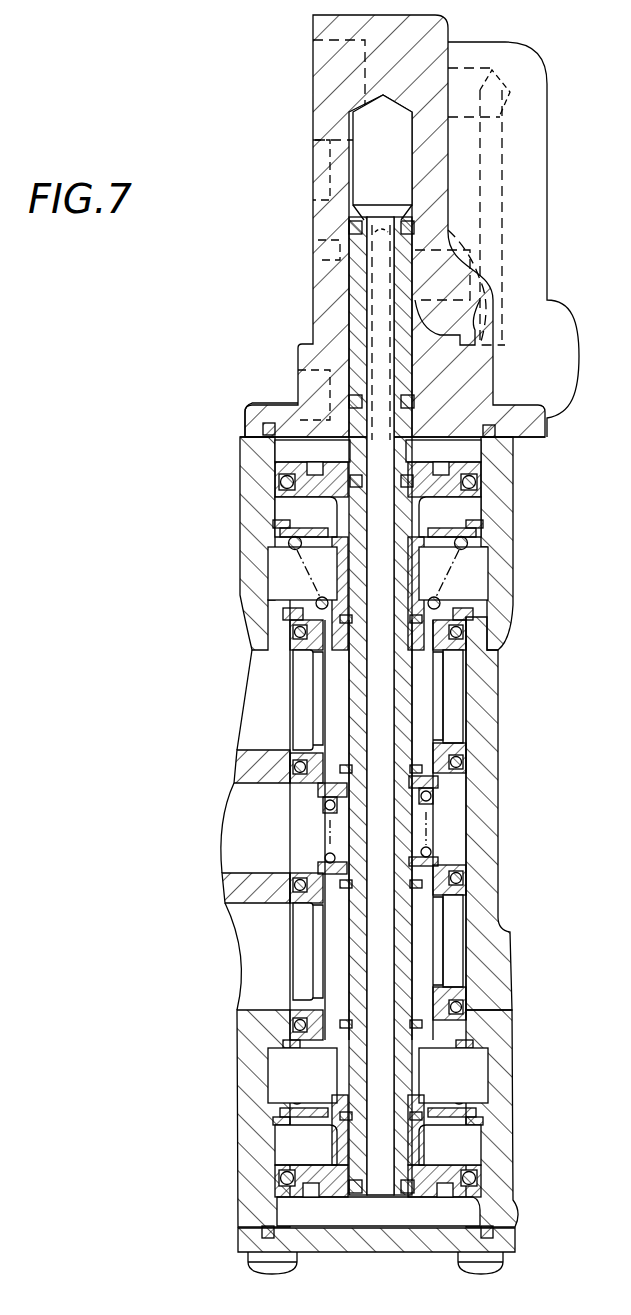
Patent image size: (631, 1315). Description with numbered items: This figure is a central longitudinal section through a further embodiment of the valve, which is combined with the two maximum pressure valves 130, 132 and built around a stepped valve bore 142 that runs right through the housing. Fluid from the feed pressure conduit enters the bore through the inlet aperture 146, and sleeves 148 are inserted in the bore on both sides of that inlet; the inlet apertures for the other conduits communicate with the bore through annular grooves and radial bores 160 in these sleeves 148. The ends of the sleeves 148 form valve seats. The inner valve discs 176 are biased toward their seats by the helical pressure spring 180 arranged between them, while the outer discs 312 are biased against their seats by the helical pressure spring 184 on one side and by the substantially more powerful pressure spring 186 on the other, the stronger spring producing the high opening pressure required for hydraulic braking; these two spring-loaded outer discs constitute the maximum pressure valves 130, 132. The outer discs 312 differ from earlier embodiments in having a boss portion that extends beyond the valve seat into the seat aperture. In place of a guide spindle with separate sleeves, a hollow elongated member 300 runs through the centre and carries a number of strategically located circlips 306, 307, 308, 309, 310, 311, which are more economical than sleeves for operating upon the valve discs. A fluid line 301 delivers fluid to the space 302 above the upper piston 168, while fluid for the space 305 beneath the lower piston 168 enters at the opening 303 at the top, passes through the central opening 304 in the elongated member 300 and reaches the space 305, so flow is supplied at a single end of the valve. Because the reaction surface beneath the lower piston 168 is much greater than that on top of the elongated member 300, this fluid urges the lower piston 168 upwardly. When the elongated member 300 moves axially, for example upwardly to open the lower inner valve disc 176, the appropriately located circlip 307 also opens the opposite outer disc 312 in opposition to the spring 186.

The maximum pressure valve 130 is at (480, 1102).
The maximum pressure valve 132 is at (487, 563).
The valve bore 142 is at (460, 718).
The inlet aperture 146 is at (285, 781).
The sleeve 148 is at (453, 647).
The radial bore 160 is at (284, 690).
The piston 168 is at (447, 463).
The inner valve disc 176 is at (440, 788).
The helical pressure spring 180 is at (433, 830).
The helical pressure spring 184 is at (457, 1080).
The pressure spring 186 is at (457, 572).
The hollow elongated member 300 is at (412, 378).
The fluid line 301 is at (297, 388).
The space 302 is at (293, 453).
The opening 303 is at (404, 178).
The opening 304 is at (412, 327).
The space 305 is at (416, 1227).
The circlip 306 is at (268, 555).
The circlip 307 is at (337, 647).
The circlip 308 is at (347, 763).
The circlip 309 is at (337, 890).
The circlip 310 is at (420, 1007).
The circlip 311 is at (337, 1100).
The outer disc 312 is at (327, 577).